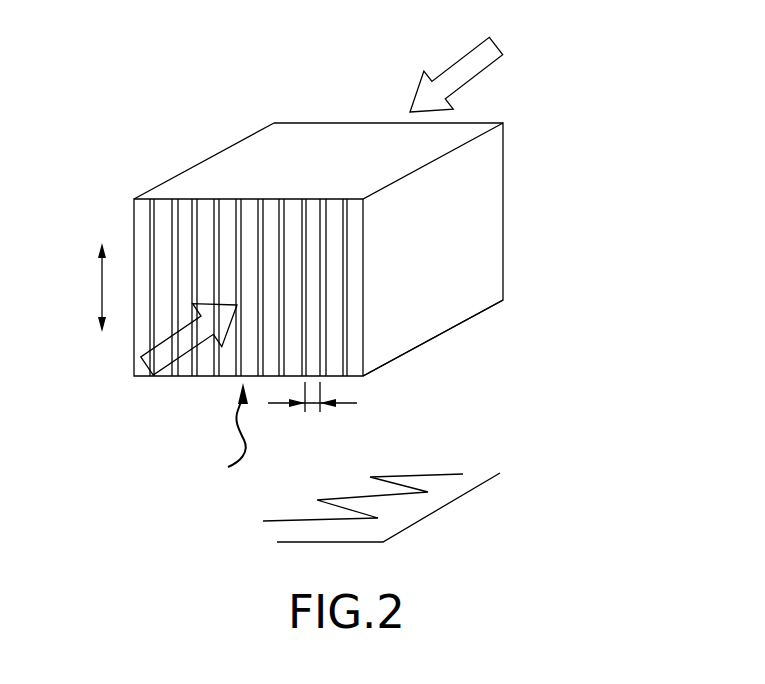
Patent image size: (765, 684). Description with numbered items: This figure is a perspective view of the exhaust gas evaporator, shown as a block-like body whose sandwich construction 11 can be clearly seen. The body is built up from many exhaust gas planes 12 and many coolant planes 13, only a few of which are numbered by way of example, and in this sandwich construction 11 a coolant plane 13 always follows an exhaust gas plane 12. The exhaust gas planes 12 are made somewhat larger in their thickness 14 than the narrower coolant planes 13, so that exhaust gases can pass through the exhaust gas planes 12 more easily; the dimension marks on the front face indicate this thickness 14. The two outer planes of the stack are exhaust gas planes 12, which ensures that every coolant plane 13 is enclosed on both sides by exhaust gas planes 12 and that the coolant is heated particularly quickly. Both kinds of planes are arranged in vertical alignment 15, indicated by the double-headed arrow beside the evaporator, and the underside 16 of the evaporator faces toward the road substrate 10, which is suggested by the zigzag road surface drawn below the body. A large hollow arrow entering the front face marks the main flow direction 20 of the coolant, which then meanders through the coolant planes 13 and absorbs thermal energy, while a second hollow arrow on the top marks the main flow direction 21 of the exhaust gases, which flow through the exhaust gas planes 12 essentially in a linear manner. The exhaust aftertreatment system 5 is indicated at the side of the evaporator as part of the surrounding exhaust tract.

The exhaust aftertreatment system 5 is at (467, 320).
The road substrate 10 is at (407, 517).
The sandwich construction 11 is at (553, 122).
The exhaust gas plane 12 is at (163, 212).
The coolant plane 13 is at (195, 217).
The thickness 14 is at (306, 405).
The vertical alignment 15 is at (100, 282).
The underside 16 is at (225, 434).
The main flow direction 20 is at (181, 346).
The main flow direction 21 is at (463, 65).